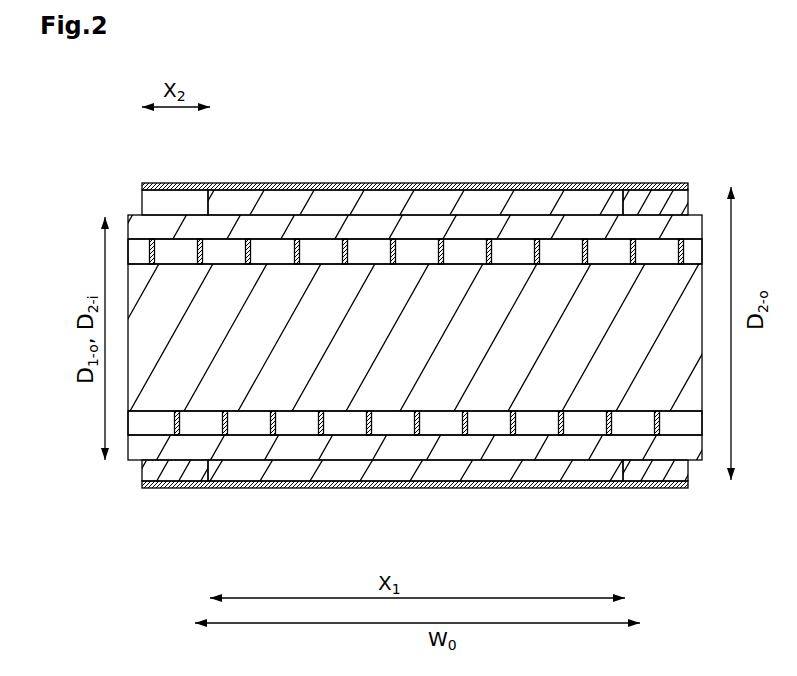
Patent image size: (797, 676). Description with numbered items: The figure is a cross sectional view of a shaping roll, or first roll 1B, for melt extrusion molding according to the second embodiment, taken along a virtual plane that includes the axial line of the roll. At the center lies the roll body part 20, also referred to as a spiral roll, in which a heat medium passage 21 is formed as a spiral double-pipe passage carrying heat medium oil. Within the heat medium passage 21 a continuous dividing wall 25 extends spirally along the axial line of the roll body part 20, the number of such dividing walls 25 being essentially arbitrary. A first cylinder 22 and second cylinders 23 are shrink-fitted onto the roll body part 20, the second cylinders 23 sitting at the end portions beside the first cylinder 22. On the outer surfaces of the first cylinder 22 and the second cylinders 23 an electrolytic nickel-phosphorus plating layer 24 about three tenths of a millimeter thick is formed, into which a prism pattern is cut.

The shaping roll (first roll) 1B is at (485, 164).
The roll body part 20 is at (563, 292).
The heat medium passage 21 is at (179, 236).
The first cylinder 22 is at (372, 200).
The second cylinder 23 is at (662, 478).
The electrolytic nickel-phosphorus plating layer 24 is at (260, 183).
The dividing wall (partitioning wall) 25 is at (638, 247).